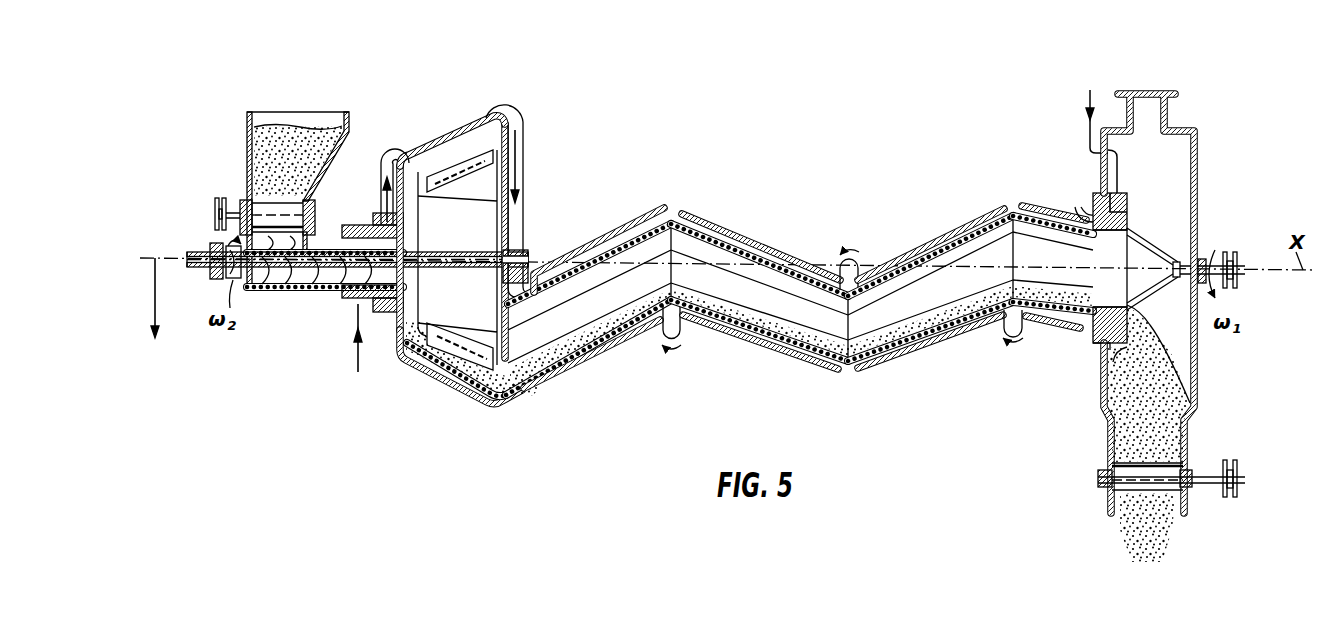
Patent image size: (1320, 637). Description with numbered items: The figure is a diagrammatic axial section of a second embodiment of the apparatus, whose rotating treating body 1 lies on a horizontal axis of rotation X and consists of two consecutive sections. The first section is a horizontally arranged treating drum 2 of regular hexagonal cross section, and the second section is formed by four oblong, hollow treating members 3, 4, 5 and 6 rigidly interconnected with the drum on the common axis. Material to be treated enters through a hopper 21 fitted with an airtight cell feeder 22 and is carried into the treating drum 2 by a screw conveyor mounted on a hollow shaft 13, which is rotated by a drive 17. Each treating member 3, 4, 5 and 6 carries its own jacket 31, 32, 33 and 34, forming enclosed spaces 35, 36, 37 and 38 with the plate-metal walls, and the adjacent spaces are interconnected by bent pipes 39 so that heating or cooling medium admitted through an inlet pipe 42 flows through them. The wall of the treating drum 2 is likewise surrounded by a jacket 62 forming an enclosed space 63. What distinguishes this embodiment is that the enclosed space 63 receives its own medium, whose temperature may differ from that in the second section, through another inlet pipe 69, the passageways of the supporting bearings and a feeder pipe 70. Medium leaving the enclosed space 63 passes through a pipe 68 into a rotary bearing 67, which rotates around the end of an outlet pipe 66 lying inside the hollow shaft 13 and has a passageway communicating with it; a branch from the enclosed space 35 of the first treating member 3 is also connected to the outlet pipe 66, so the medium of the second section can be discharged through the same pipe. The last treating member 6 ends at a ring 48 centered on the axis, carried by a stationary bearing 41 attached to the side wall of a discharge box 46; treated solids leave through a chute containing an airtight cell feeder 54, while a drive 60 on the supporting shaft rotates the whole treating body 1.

The treating body 1 is at (799, 189).
The treating drum 2 is at (470, 266).
The treating member 3 is at (570, 327).
The treating member 4 is at (790, 324).
The treating member 5 is at (947, 298).
The treating member 6 is at (1073, 297).
The hollow shaft 13 is at (312, 291).
The drive 17 is at (215, 276).
The hopper 21 is at (249, 115).
The airtight cell feeder 22 is at (260, 207).
The jacket 31 is at (566, 387).
The jacket 32 is at (735, 366).
The jacket 33 is at (895, 375).
The jacket 34 is at (1043, 331).
The enclosed space 35 is at (620, 238).
The enclosed space 36 is at (740, 240).
The enclosed space 37 is at (932, 238).
The enclosed space 38 is at (1040, 206).
The bent pipes 39 is at (1085, 207).
The stationary bearing 41 is at (1128, 203).
The inlet pipe 42 is at (1087, 103).
The discharge box 46 is at (1202, 158).
The ring 48 is at (1091, 352).
The airtight cell feeder 54 is at (1106, 494).
The drive 60 is at (1240, 283).
The jacket 62 is at (478, 401).
The enclosed space 63 is at (438, 146).
The outlet pipe 66 is at (198, 251).
The bearing 67 is at (525, 250).
The pipe 68 is at (503, 101).
The inlet pipe 69 is at (357, 359).
The feeder pipe 70 is at (398, 146).